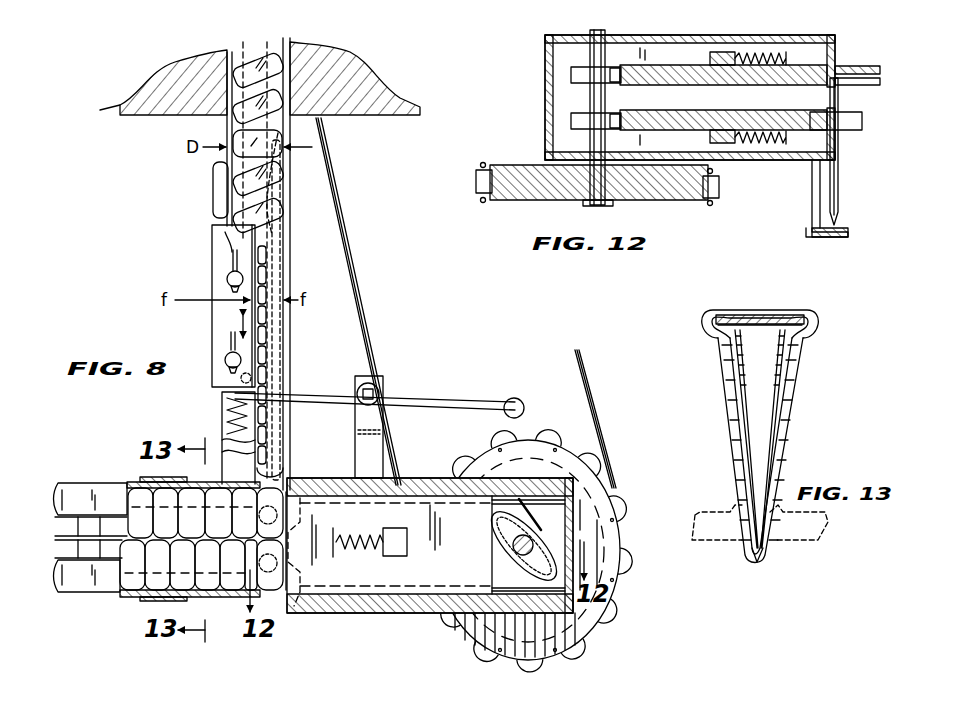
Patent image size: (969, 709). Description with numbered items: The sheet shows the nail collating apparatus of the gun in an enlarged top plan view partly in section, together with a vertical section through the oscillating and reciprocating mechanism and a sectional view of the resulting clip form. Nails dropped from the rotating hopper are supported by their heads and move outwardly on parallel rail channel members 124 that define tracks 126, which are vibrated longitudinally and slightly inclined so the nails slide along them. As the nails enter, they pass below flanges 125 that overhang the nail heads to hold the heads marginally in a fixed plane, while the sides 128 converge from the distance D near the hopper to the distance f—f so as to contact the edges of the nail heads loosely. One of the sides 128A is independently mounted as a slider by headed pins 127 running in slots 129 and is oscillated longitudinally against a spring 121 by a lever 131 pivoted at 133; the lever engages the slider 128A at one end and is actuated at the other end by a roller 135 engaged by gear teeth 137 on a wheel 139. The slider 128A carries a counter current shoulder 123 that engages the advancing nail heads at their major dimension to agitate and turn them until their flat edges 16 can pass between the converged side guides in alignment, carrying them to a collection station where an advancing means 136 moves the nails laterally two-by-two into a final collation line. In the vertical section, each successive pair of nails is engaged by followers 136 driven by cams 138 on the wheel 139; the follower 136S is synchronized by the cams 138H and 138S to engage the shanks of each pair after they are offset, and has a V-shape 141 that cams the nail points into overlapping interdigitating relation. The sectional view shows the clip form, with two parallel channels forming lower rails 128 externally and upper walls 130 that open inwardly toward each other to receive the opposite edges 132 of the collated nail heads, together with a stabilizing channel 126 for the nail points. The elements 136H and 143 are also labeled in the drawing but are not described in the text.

In FIG. 8, the flat edges 16 is at (224, 250).
In FIG. 8, the spring 121 is at (228, 390).
In FIG. 8, the counter current shoulder 123 is at (226, 226).
In FIG. 8, the rail channel members 124 is at (290, 192).
In FIG. 13, the rail channel members 124 is at (808, 338).
In FIG. 8, the flanges 125 is at (282, 292).
In FIG. 8, the tracks 126 is at (286, 270).
In FIG. 13, the tracks 126 is at (772, 562).
In FIG. 8, the headed pins 127 is at (225, 365).
In FIG. 8, the sides 128 is at (226, 155).
In FIG. 13, the sides 128 is at (704, 322).
In FIG. 8, the slider side 128A is at (226, 240).
In FIG. 8, the slots 129 is at (230, 342).
In FIG. 13, the upper walls 130 is at (790, 310).
In FIG. 8, the lever 131 is at (308, 393).
In FIG. 13, the crown reinforcing strip 132 is at (812, 322).
In FIG. 8, the pivot 133 is at (384, 392).
In FIG. 8, the roller 135 is at (516, 402).
In FIG. 8, the advancing means 136 is at (412, 488).
In FIG. 8, the follower 136S is at (302, 478).
In FIG. 12, the follower 136S is at (688, 130).
In FIG. 8, the hub 136H is at (504, 534).
In FIG. 12, the hub 136H is at (684, 68).
In FIG. 8, the gear teeth 137 is at (612, 462).
In FIG. 12, the gear teeth 137 is at (478, 183).
In FIG. 8, the cams 138 is at (556, 520).
In FIG. 8, the cam 138S is at (498, 516).
In FIG. 12, the cam 138S is at (585, 118).
In FIG. 12, the cam 138H is at (610, 45).
In FIG. 12, the wheel 139 is at (532, 198).
In FIG. 8, the V-shape 141 is at (294, 606).
In FIG. 12, the V-shape 141 is at (863, 125).
In FIG. 13, the clinching anvil 143 is at (836, 528).